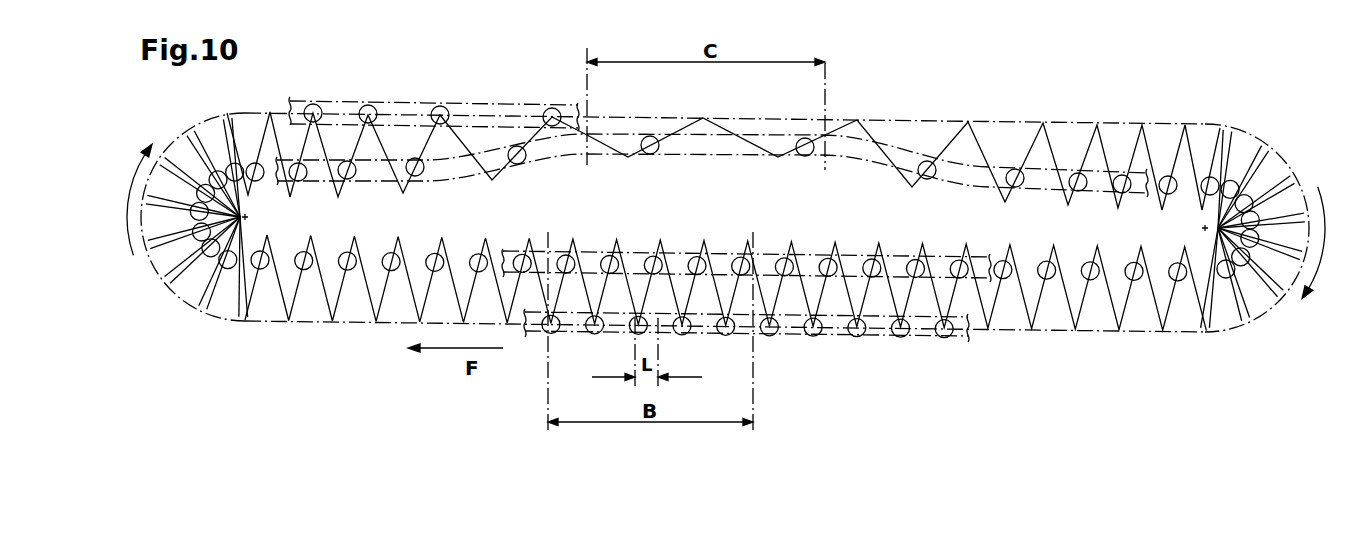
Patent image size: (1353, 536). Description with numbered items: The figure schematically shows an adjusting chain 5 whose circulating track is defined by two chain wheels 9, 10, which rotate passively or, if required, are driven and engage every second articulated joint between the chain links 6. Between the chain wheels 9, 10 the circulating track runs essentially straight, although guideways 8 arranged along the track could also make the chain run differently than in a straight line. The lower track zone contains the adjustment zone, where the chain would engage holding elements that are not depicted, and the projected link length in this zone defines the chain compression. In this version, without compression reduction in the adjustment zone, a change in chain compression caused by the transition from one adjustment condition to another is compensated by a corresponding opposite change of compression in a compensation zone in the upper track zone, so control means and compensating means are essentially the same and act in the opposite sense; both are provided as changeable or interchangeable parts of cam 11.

The adjusting chain 5 is at (1206, 116).
The chain links 6 is at (1133, 138).
The guideways 8 is at (349, 102).
The chain wheel 9 is at (197, 284).
The chain wheel 10 is at (1268, 178).
The cam 11 is at (450, 176).